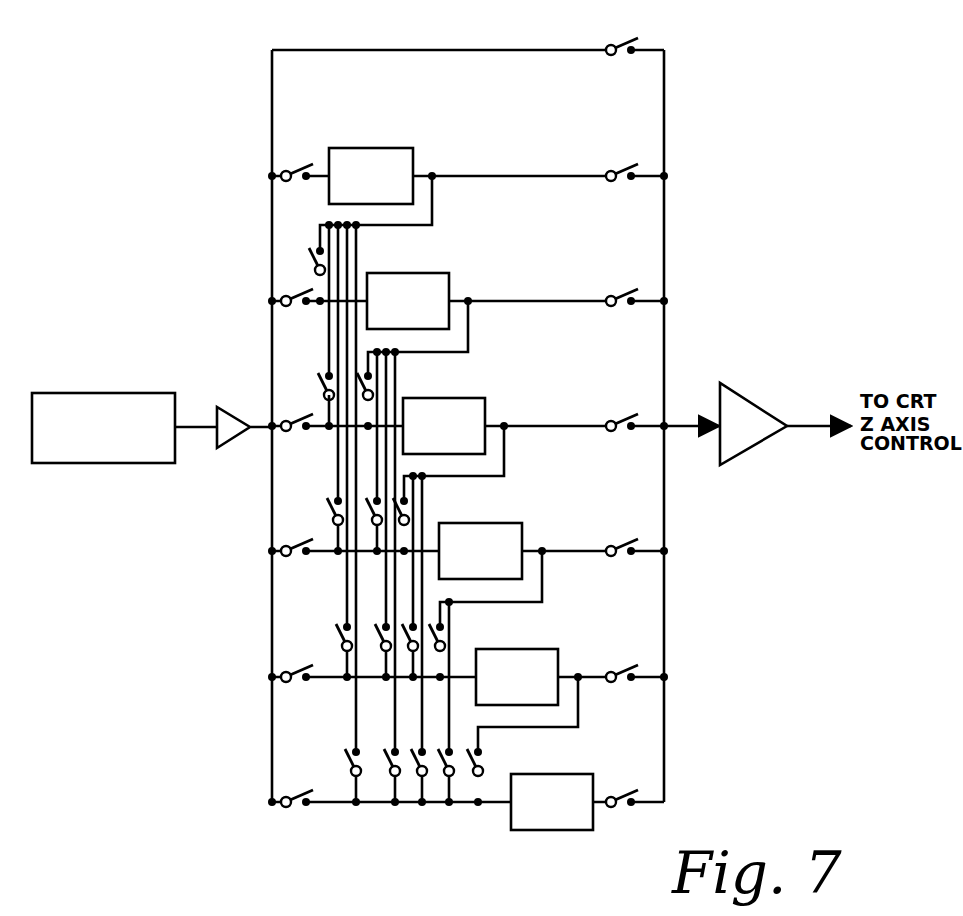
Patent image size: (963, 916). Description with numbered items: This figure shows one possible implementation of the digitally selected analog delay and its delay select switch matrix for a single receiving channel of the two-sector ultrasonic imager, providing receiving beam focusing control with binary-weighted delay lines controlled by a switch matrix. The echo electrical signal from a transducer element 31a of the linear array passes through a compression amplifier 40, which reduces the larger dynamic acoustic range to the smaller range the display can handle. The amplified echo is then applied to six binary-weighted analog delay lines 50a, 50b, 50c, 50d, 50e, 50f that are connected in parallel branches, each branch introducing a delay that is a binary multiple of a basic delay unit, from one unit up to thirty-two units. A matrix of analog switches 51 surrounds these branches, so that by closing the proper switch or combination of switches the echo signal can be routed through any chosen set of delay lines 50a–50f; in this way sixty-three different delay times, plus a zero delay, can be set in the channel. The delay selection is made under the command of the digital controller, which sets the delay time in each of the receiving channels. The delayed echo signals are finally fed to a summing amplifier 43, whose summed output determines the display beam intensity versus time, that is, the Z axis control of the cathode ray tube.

The transducer element 31a is at (79, 392).
The compression amplifier 40 is at (232, 410).
The summing amplifier 43 is at (762, 410).
The binary-weighted analog delay line 50a is at (409, 163).
The binary-weighted analog delay line 50b is at (445, 292).
The binary-weighted analog delay line 50c is at (482, 417).
The binary-weighted analog delay line 50d is at (518, 544).
The binary-weighted analog delay line 50e is at (554, 667).
The binary-weighted analog delay line 50f is at (592, 796).
The analog switches 51 is at (622, 41).